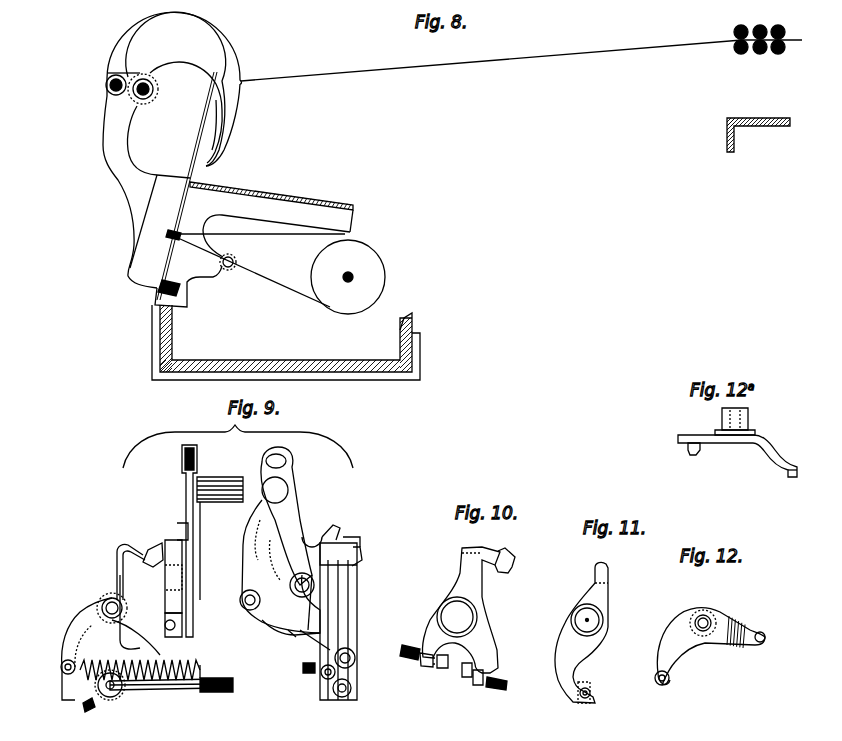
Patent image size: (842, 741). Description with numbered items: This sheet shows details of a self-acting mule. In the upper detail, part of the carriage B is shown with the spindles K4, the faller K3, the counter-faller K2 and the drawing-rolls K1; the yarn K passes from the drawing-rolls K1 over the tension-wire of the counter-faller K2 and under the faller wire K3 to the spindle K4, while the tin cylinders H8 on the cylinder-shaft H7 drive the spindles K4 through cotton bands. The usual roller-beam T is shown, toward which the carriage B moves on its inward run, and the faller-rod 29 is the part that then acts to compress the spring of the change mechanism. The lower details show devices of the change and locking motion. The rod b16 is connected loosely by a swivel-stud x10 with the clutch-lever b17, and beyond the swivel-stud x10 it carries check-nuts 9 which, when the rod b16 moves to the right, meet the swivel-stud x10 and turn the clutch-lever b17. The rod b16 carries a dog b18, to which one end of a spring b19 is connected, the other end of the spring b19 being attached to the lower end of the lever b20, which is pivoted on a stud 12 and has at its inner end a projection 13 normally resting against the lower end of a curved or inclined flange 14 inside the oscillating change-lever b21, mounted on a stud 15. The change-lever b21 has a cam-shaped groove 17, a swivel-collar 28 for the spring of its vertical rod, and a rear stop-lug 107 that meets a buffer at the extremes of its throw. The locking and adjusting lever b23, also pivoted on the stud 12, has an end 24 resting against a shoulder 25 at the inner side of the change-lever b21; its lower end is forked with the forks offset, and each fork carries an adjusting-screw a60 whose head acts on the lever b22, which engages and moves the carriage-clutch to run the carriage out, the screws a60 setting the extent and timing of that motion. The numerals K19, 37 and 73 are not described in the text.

In FIG. 8, the yarn K is at (528, 56).
In FIG. 8, the drawing-rolls K1 is at (732, 52).
In FIG. 8, the counter-faller K2 is at (238, 64).
In FIG. 8, the faller K3 is at (213, 147).
In FIG. 8, the spindles K4 is at (182, 211).
In FIG. 8, the pivot lug K19 is at (106, 86).
In FIG. 8, the faller-rod 29 is at (150, 96).
In FIG. 8, the roller-beam T is at (727, 131).
In FIG. 8, the cylinder-shaft H7 is at (352, 275).
In FIG. 8, the tin cylinders H8 is at (374, 280).
In FIG. 8, the carriage B is at (269, 342).
In FIG. 9, the stop-lug 107 is at (227, 477).
In FIG. 9, the change-lever b21 is at (183, 507).
In FIG. 9, the end of locking and adjusting lever 24 is at (155, 553).
In FIG. 10, the end of locking and adjusting lever 24 is at (517, 558).
In FIG. 9, the shoulder 25 is at (178, 557).
In FIG. 9, the locking and adjusting lever b23 is at (117, 565).
In FIG. 10, the locking and adjusting lever b23 is at (482, 592).
In FIG. 9, the clutch-lever b17 is at (120, 575).
In FIG. 11, the clutch-lever b17 is at (557, 643).
In FIG. 9, the stud 12 is at (108, 604).
In FIG. 12, the stud 12 is at (705, 615).
In FIG. 9, the lever b20 is at (73, 623).
In FIG. 12A, the lever b20 is at (737, 442).
In FIG. 12, the lever b20 is at (705, 642).
In FIG. 9, the spring b19 is at (197, 665).
In FIG. 9, the rod b16 is at (160, 688).
In FIG. 9, the dog b18 is at (224, 698).
In FIG. 9, the check-nuts 9 is at (92, 690).
In FIG. 9, the lever b22 is at (83, 710).
In FIG. 9, the curved or inclined flange 14 is at (177, 637).
In FIG. 9, the pin 37 is at (197, 630).
In FIG. 9, the cam-shaped groove 17 is at (253, 562).
In FIG. 9, the swivel-collar 28 is at (241, 603).
In FIG. 9, the stud 15 is at (305, 582).
In FIG. 9, the pin 73 is at (297, 637).
In FIG. 9, the swivel-stud x10 is at (342, 698).
In FIG. 11, the swivel-stud x10 is at (593, 702).
In FIG. 10, the adjusting-screws a60 is at (443, 670).
In FIG. 12A, the projection 13 is at (795, 478).
In FIG. 12, the projection 13 is at (763, 634).